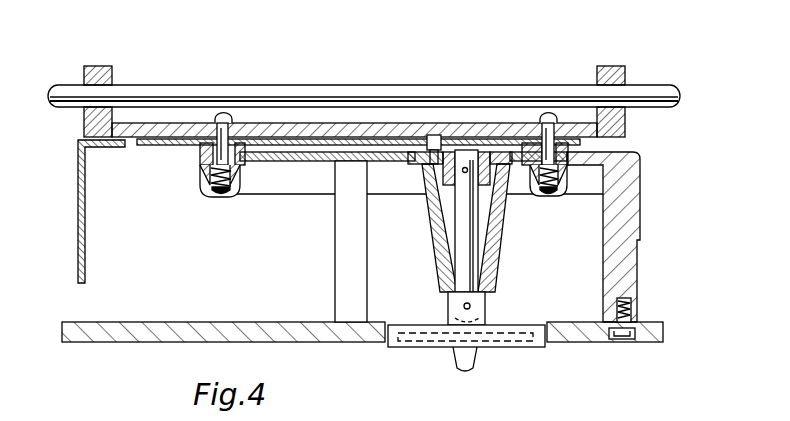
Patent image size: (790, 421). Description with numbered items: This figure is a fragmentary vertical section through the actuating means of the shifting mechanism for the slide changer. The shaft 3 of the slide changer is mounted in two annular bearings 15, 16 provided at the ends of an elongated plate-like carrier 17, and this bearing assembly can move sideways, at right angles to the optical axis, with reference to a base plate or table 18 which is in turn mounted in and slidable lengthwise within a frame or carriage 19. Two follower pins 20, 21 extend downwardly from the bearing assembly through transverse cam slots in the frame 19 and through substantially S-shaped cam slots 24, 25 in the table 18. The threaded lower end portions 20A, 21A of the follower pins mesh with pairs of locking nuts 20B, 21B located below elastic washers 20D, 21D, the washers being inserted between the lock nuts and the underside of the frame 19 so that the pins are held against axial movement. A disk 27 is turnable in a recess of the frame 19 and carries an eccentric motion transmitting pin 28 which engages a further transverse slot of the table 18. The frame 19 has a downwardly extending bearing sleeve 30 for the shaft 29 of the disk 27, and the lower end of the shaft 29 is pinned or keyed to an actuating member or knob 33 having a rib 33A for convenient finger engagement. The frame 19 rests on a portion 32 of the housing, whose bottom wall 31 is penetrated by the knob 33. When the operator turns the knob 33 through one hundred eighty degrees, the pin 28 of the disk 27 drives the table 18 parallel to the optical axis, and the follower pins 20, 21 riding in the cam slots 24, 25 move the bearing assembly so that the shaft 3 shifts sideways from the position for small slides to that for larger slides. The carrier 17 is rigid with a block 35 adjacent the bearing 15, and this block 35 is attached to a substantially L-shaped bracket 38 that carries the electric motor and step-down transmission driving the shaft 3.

The shaft 3 is at (357, 95).
The annular bearing 15 is at (103, 66).
The annular bearing 16 is at (608, 66).
The elongated plate-like carrier 17 is at (298, 123).
The table 18 is at (155, 146).
The frame 19 is at (312, 162).
The follower pin 20 is at (230, 125).
The lower end portion of follower pin 20A is at (228, 194).
The locking nuts 20B is at (210, 194).
The elastic washer 20D is at (207, 176).
The follower pin 21 is at (557, 127).
The lower end portion of follower pin 21A is at (552, 194).
The locking nuts 21B is at (563, 192).
The elastic washer 21D is at (538, 177).
The S-shaped cam slot 24 is at (203, 145).
The S-shaped cam slot 25 is at (527, 128).
The disk 27 is at (492, 138).
The motion transmitting pin 28 is at (437, 135).
The shaft of the disk 29 is at (443, 268).
The bearing sleeve 30 is at (492, 283).
The bottom wall 31 is at (230, 332).
The housing portion 32 is at (373, 190).
The knob 33 is at (517, 340).
The rib 33A is at (460, 370).
The block 35 is at (95, 129).
The L-shaped bracket 38 is at (84, 267).